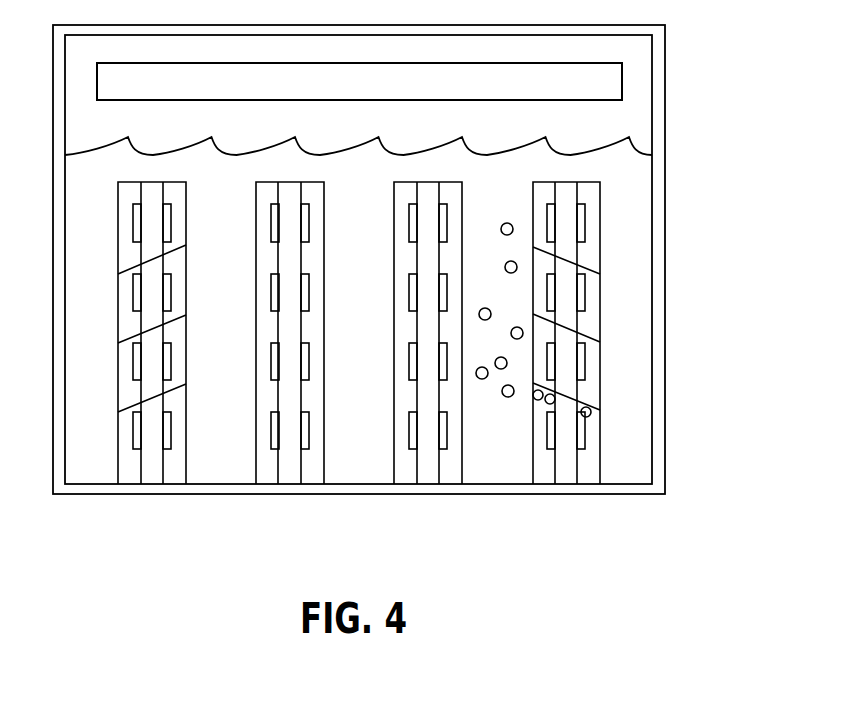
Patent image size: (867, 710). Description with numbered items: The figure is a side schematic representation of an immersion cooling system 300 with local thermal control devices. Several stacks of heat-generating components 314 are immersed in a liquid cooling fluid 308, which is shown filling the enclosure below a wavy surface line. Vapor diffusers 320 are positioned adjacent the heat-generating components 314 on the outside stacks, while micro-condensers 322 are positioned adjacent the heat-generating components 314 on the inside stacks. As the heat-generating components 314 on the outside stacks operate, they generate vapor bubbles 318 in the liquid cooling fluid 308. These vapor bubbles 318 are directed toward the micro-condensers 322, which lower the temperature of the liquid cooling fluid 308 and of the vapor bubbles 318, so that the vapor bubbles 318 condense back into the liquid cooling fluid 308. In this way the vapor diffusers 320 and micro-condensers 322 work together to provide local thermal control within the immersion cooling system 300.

The immersion cooling system 300 is at (694, 57).
The liquid cooling fluid 308 is at (515, 196).
The heat-generating component 314 is at (578, 226).
The vapor bubble 318 is at (591, 414).
The vapor diffuser 320 is at (578, 400).
The micro-condenser 322 is at (435, 472).